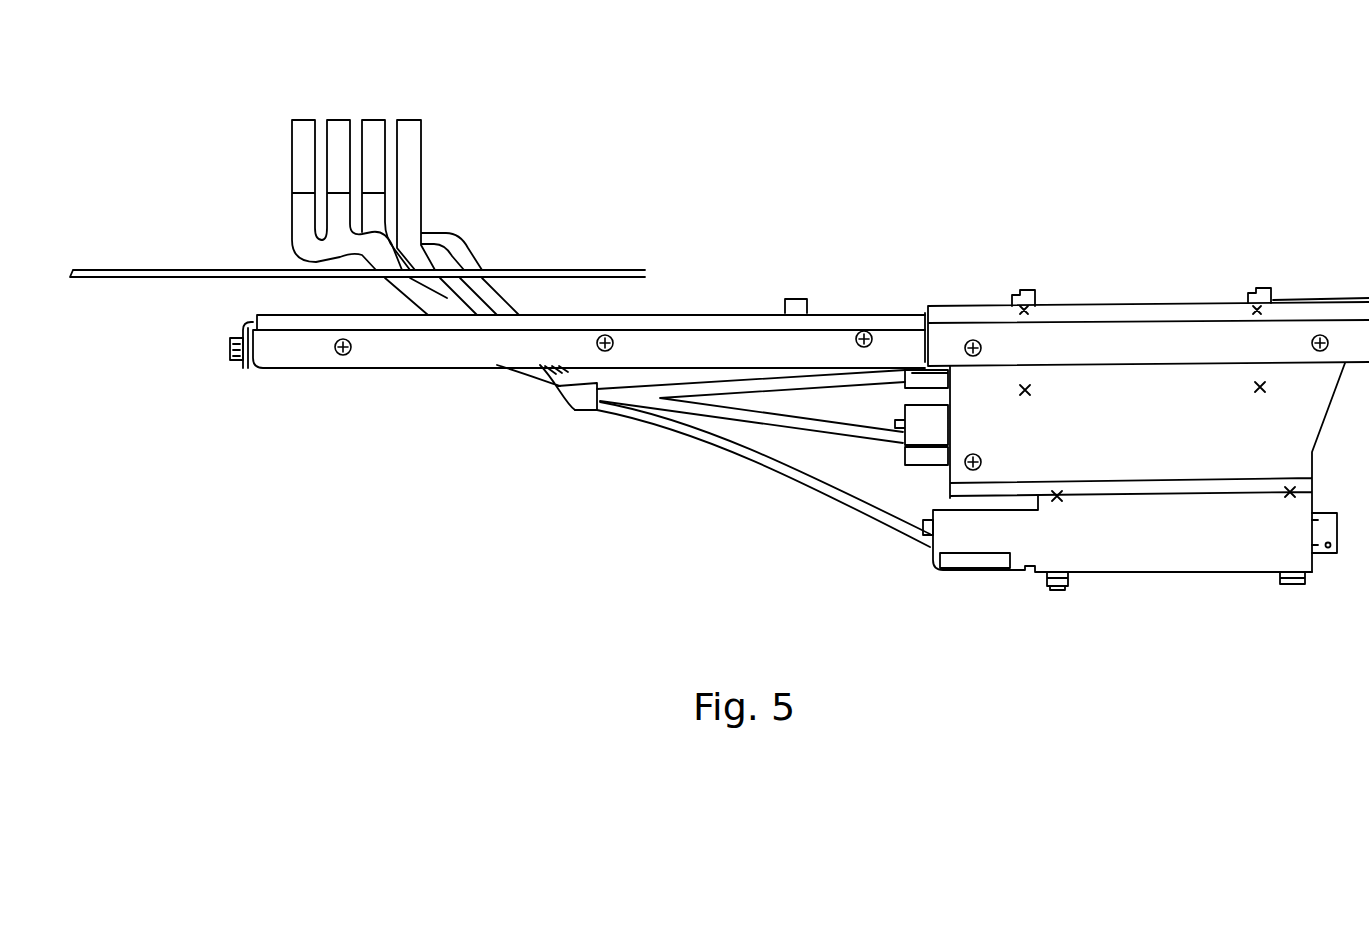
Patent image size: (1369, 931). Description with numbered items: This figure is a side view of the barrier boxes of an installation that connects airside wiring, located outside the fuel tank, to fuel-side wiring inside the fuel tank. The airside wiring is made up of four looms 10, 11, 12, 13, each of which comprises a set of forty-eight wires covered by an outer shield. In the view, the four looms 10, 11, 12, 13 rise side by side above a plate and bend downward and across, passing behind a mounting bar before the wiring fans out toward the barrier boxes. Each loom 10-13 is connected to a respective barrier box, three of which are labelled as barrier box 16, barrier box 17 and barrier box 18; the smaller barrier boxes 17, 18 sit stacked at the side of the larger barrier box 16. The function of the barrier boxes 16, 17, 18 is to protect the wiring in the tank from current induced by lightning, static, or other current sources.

The loom 10 is at (302, 119).
The loom 11 is at (340, 119).
The loom 12 is at (371, 119).
The loom 13 is at (414, 119).
The barrier box 16 is at (1175, 572).
The barrier box 17 is at (902, 466).
The barrier box 18 is at (904, 382).